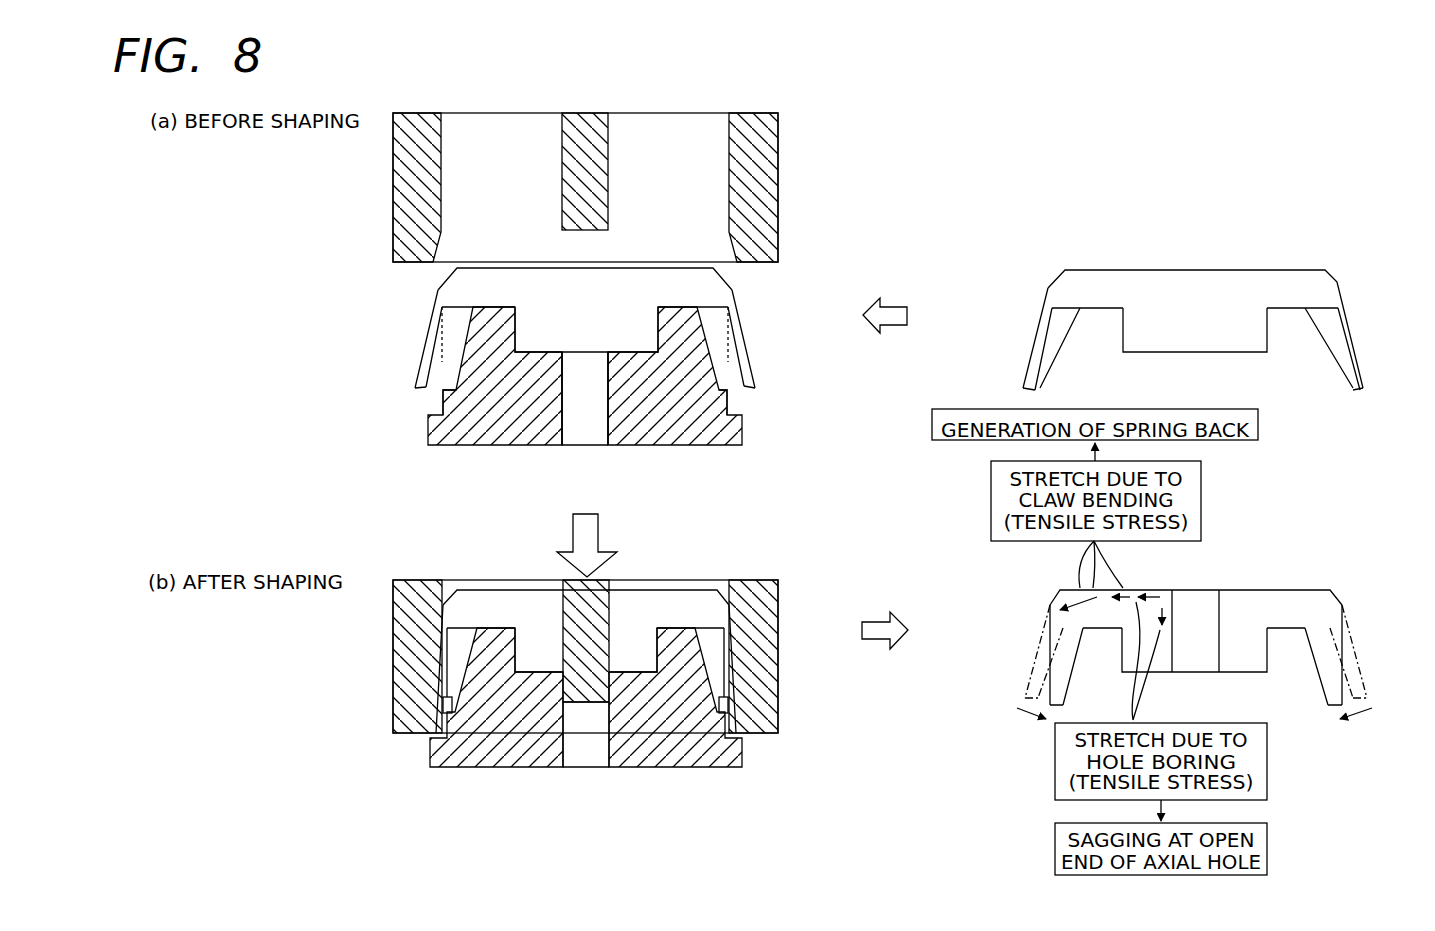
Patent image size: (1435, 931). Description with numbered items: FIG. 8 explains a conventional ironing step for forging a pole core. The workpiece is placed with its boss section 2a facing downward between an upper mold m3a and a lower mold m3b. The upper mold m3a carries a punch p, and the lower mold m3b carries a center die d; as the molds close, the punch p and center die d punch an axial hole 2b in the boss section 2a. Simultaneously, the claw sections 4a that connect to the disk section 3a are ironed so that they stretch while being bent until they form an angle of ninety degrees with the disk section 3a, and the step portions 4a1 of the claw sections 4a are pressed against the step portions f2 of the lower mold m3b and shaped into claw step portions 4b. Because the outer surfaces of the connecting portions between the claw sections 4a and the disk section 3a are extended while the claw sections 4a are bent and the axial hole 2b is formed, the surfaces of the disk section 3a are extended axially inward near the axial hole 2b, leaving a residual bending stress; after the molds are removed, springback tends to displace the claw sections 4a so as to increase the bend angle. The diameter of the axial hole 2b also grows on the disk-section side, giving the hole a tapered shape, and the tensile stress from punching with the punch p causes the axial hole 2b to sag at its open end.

The upper mold m3a is at (770, 171).
The lower mold m3b is at (735, 430).
The punch p is at (610, 206).
The disk section 3a is at (493, 286).
The claw sections 4a is at (453, 323).
The step portions of the claw sections 4a1 is at (437, 357).
The claw step portions 4b is at (445, 689).
The step portions of the lower mold f2 is at (433, 392).
The boss section 2a is at (632, 340).
The axial hole 2b is at (605, 418).
The center die d is at (563, 367).